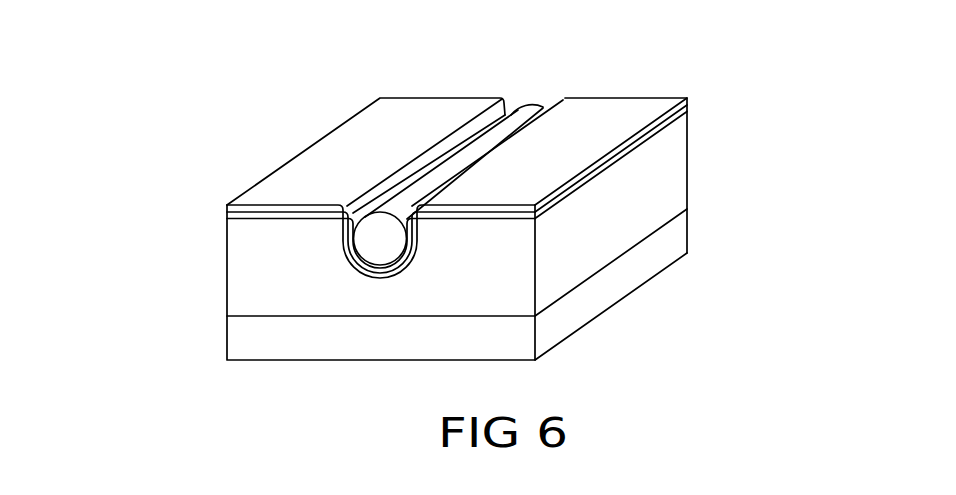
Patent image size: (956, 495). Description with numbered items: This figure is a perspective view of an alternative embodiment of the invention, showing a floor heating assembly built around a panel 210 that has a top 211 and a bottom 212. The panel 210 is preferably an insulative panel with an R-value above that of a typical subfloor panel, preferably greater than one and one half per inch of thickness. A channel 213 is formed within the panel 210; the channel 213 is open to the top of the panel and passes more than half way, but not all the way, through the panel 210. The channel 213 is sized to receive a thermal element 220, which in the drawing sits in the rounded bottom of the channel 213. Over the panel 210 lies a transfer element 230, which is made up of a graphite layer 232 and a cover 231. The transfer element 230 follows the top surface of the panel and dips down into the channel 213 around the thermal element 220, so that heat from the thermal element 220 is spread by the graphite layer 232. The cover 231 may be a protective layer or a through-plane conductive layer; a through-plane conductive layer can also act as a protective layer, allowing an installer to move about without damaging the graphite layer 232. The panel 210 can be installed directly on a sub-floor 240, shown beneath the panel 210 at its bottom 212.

The panel 210 is at (688, 180).
The top 211 is at (672, 126).
The bottom 212 is at (633, 245).
The channel 213 is at (420, 260).
The thermal element 220 is at (375, 242).
The transfer element 230 is at (293, 165).
The cover 231 is at (360, 147).
The graphite layer 232 is at (240, 212).
The sub-floor 240 is at (618, 278).